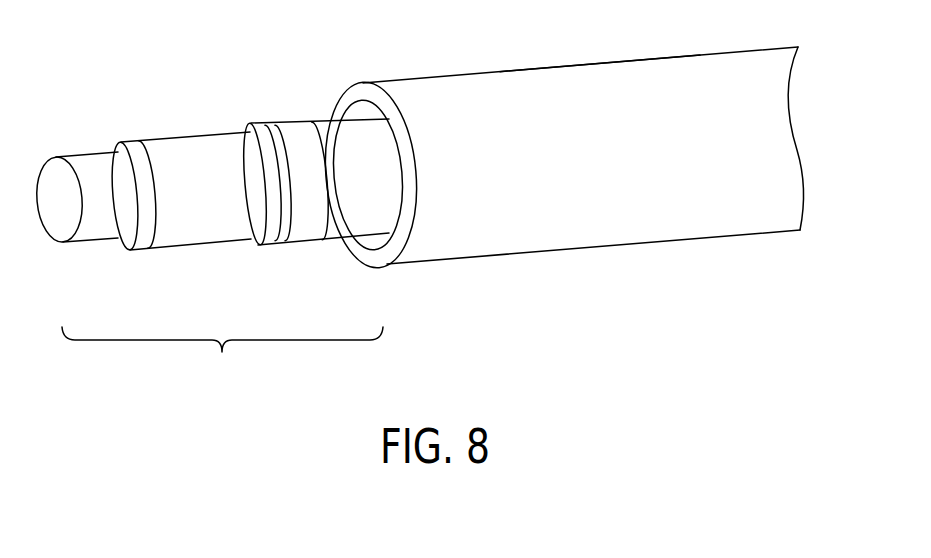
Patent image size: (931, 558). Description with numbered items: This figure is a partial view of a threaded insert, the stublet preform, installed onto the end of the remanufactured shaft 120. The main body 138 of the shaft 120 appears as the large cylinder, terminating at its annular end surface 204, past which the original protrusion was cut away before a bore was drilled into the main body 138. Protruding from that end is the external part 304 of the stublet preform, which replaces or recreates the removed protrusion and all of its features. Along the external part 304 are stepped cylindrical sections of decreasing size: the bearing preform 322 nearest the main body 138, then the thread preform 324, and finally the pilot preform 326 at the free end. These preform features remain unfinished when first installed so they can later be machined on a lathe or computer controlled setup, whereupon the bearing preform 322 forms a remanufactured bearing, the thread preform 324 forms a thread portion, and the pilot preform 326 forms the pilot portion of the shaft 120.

The shaft 120 is at (708, 227).
The main body 138 is at (600, 77).
The annular end surface 204 is at (351, 261).
The external part 304 is at (222, 360).
The bearing preform 322 is at (291, 128).
The thread preform 324 is at (190, 148).
The pilot preform 326 is at (90, 167).